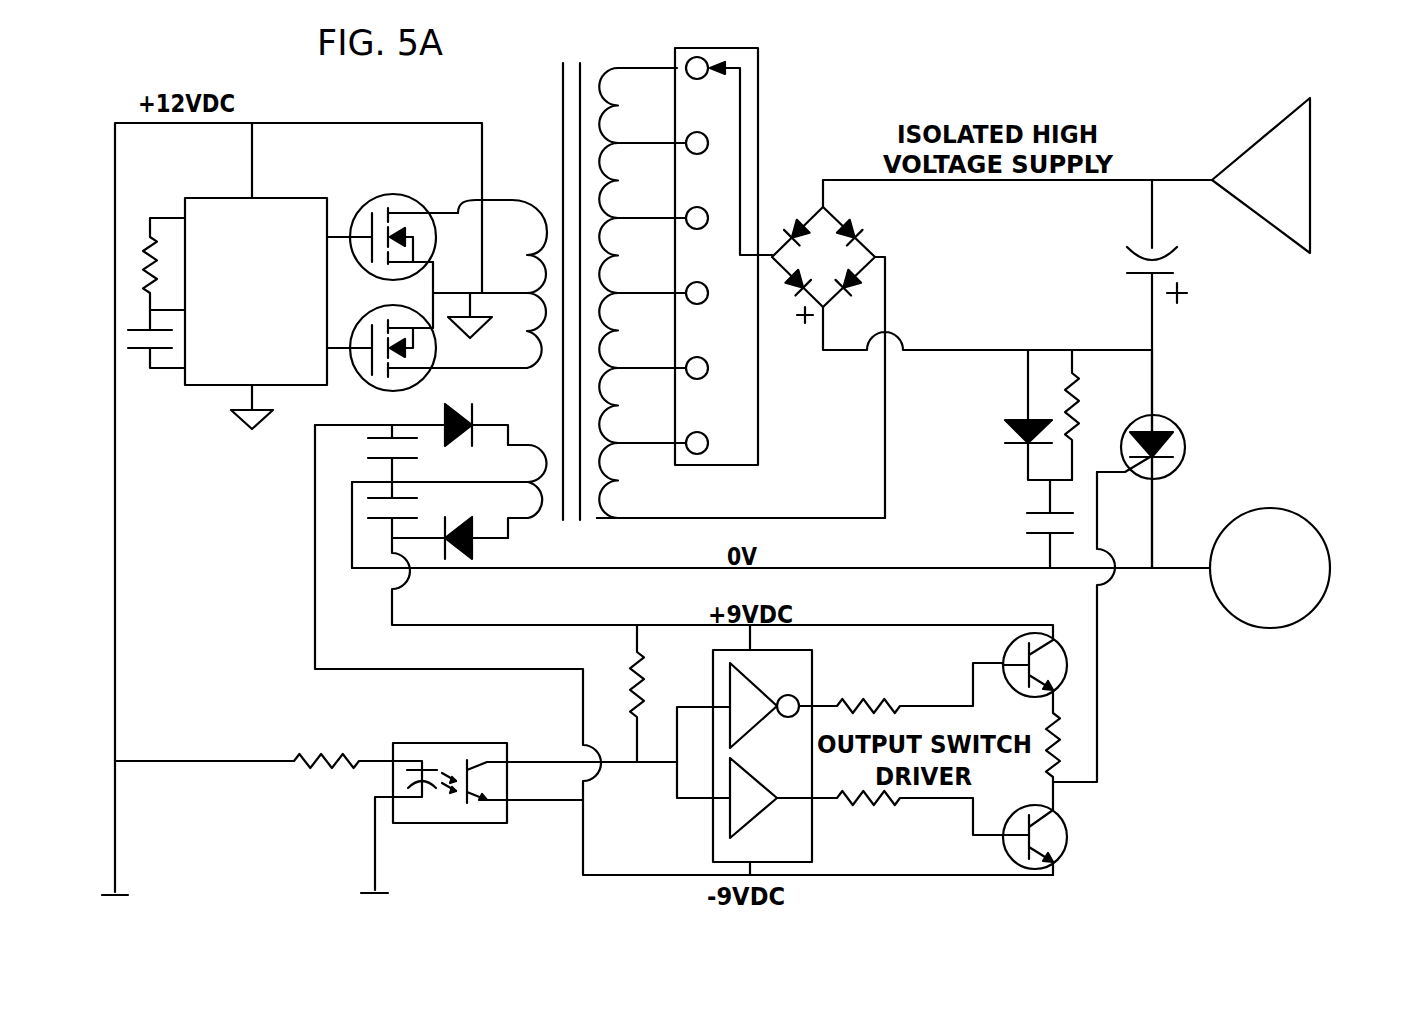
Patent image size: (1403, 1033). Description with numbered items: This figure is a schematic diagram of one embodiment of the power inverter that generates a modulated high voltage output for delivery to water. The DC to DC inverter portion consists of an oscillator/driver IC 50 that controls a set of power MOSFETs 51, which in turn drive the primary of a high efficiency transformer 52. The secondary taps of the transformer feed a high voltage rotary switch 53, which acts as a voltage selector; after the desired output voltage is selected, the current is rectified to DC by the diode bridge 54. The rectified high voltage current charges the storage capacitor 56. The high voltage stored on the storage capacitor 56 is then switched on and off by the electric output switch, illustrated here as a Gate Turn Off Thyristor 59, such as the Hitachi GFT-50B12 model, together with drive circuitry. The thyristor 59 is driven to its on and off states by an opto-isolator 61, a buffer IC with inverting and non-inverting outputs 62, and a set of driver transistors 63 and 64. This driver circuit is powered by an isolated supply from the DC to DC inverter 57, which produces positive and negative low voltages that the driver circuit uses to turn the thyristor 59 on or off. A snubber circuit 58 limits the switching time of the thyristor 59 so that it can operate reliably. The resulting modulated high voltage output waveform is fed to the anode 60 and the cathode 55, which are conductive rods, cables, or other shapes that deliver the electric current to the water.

The oscillator/driver IC 50 is at (218, 198).
The power MOSFETs 51 is at (392, 307).
The high efficiency transformer 52 is at (562, 128).
The high voltage rotary switch 53 is at (758, 97).
The diode bridge 54 is at (857, 217).
The cathode 55 is at (1257, 143).
The storage capacitor 56 is at (1177, 263).
The DC to DC inverter isolated supply 57 is at (492, 540).
The snubber circuit 58 is at (1025, 420).
The gate turn off thyristor 59 is at (1125, 437).
The anode 60 is at (1223, 607).
The opto-isolator 61 is at (476, 823).
The buffer IC with inverting and non-inverting outputs 62 is at (812, 680).
The driver transistor 63 is at (1010, 642).
The driver transistor 64 is at (1067, 835).